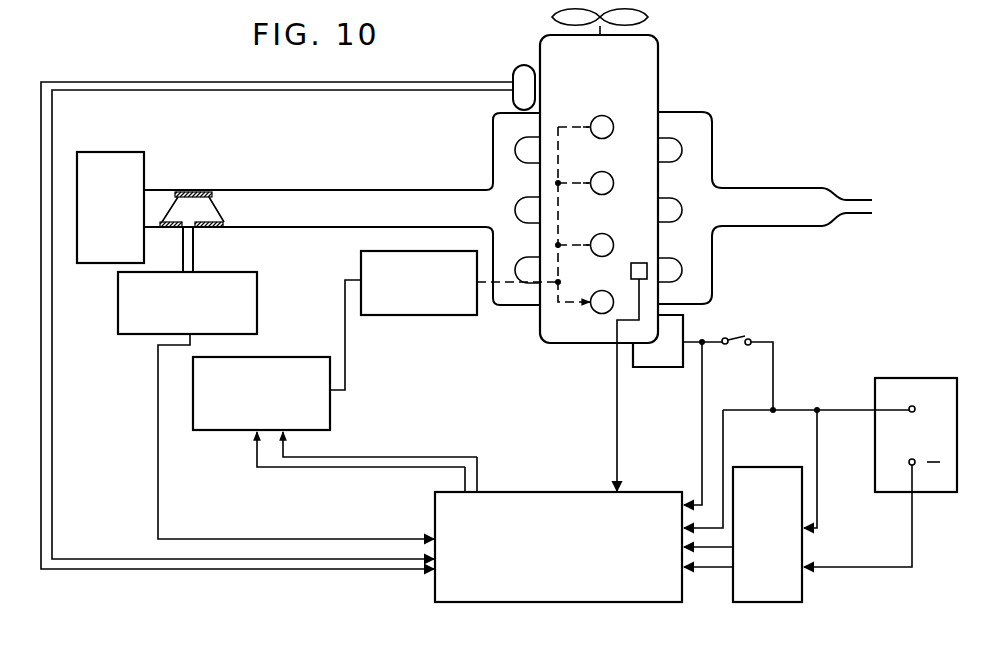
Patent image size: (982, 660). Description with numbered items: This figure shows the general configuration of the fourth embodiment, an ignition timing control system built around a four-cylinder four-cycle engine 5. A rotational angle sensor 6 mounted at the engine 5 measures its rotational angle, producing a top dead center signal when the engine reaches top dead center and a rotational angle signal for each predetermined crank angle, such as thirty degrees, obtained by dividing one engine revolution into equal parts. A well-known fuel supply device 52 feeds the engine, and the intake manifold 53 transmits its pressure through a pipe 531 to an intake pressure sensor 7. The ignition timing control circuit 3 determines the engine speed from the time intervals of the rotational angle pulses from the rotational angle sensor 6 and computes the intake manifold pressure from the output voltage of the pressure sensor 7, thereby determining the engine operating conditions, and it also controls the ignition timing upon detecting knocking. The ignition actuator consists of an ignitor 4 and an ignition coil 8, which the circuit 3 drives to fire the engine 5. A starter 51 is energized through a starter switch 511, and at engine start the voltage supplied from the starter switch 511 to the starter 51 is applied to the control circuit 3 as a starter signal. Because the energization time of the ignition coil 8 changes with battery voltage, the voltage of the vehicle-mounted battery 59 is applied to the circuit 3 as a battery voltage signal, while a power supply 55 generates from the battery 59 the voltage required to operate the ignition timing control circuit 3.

The ignition timing control circuit 3 is at (651, 492).
The ignitor 4 is at (283, 357).
The engine 5 is at (659, 47).
The rotational angle sensor 6 is at (524, 65).
The intake pressure sensor 7 is at (257, 299).
The ignition coil 8 is at (361, 259).
The starter 51 is at (684, 340).
The starter switch 511 is at (742, 334).
The fuel supply device 52 is at (165, 148).
The intake manifold 53 is at (197, 192).
The pipe 531 is at (194, 246).
The power supply 55 is at (763, 467).
The battery 59 is at (916, 378).